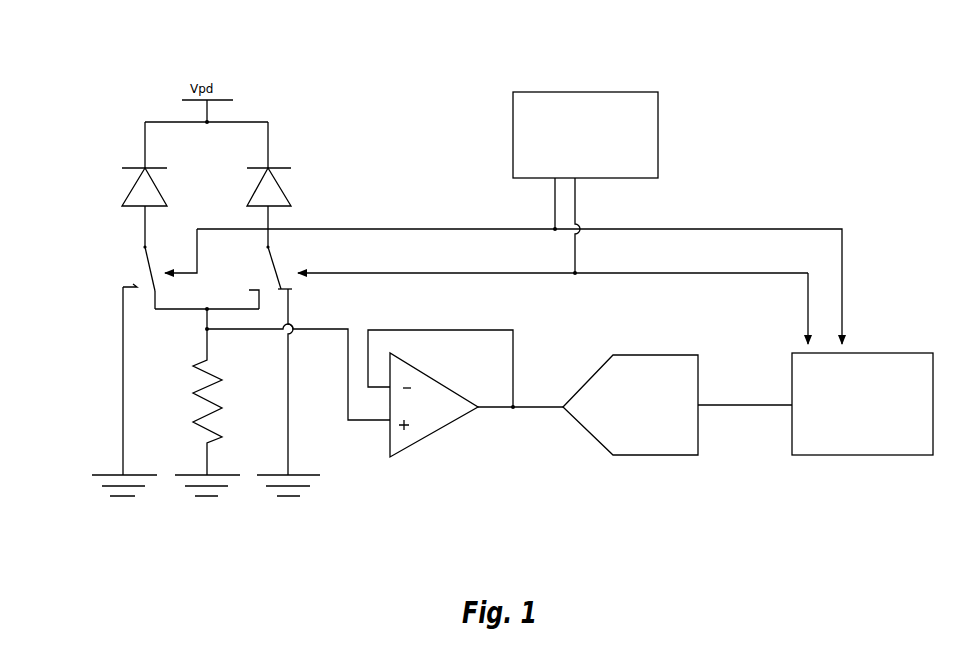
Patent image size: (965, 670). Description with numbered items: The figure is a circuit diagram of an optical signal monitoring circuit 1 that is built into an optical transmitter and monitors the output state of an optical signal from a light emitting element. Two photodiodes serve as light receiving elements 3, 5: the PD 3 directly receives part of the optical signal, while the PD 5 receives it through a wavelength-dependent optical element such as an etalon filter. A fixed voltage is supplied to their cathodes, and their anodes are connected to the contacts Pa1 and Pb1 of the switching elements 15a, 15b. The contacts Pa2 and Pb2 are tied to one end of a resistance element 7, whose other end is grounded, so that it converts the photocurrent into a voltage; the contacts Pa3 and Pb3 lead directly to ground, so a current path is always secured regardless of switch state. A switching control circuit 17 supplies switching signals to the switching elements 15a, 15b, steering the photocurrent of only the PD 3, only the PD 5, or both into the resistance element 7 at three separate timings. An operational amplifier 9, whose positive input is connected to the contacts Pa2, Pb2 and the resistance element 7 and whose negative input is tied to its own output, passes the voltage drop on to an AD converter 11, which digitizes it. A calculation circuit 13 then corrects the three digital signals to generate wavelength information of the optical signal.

The optical signal monitoring circuit 1 is at (849, 42).
The light receiving element (PD) 3 is at (122, 195).
The light receiving element (PD) 5 is at (291, 187).
The resistance element 7 is at (192, 384).
The operational amplifier 9 is at (430, 428).
The AD converter 11 is at (653, 458).
The calculation circuit 13 is at (862, 457).
The switching element 15a is at (150, 268).
The switching element 15b is at (268, 264).
The switching control circuit 17 is at (612, 92).
The contact Pa1 is at (143, 246).
The contact Pa2 is at (153, 296).
The contact Pa3 is at (130, 286).
The contact Pb1 is at (273, 247).
The contact Pb2 is at (254, 290).
The contact Pb3 is at (293, 290).